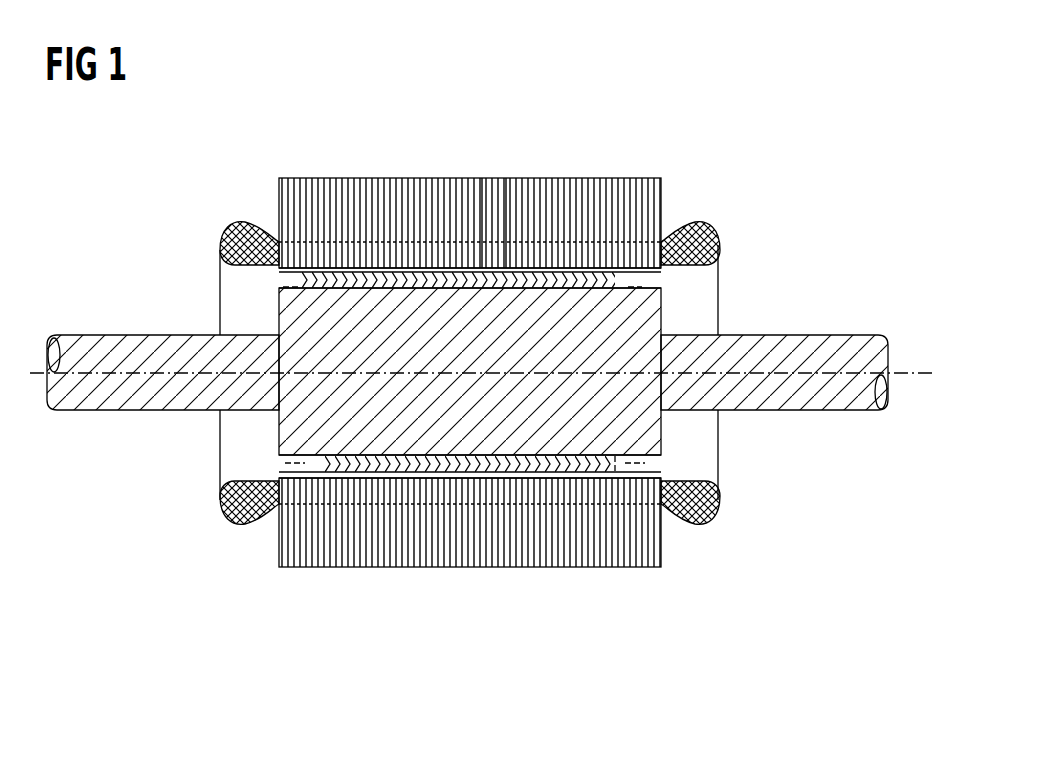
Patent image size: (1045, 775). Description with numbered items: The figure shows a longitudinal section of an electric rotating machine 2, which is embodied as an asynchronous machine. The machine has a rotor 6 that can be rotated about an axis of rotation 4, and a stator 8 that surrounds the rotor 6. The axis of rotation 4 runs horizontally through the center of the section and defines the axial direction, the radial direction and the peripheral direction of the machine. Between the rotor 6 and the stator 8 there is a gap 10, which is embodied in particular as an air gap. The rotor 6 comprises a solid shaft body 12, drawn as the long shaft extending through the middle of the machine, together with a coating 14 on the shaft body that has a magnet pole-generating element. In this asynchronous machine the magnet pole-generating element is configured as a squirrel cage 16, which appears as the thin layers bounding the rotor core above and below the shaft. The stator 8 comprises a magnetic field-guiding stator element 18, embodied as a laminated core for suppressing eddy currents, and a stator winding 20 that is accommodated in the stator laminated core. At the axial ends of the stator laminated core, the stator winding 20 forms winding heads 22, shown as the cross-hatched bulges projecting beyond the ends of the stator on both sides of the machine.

The electric rotating machine 2 is at (768, 117).
The axis of rotation 4 is at (920, 373).
The rotor 6 is at (648, 311).
The stator 8 is at (652, 199).
The gap 10 is at (266, 274).
The solid shaft body 12 is at (843, 345).
The coating 14 is at (279, 465).
The squirrel cage 16 is at (661, 463).
The magnetic field-guiding stator element 18 is at (402, 245).
The stator winding 20 is at (494, 245).
The winding heads 22 is at (718, 228).